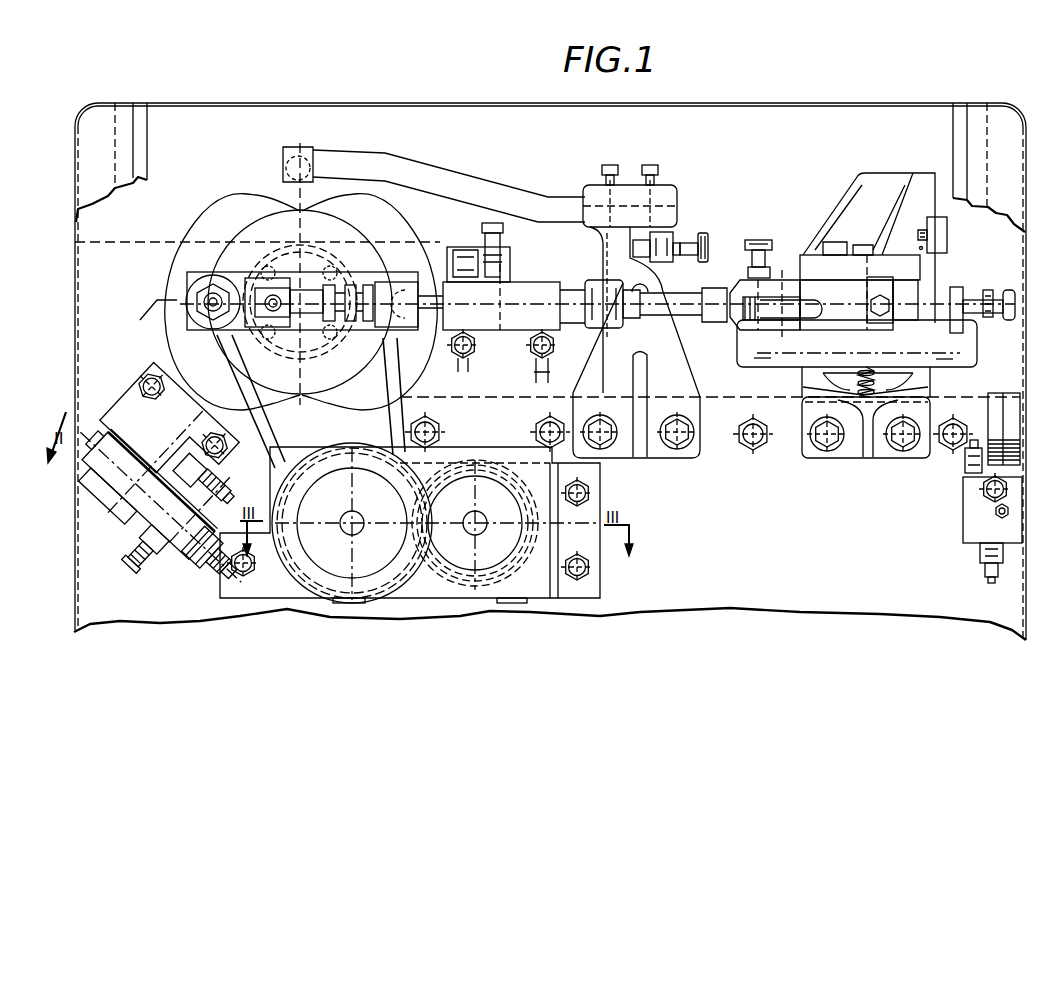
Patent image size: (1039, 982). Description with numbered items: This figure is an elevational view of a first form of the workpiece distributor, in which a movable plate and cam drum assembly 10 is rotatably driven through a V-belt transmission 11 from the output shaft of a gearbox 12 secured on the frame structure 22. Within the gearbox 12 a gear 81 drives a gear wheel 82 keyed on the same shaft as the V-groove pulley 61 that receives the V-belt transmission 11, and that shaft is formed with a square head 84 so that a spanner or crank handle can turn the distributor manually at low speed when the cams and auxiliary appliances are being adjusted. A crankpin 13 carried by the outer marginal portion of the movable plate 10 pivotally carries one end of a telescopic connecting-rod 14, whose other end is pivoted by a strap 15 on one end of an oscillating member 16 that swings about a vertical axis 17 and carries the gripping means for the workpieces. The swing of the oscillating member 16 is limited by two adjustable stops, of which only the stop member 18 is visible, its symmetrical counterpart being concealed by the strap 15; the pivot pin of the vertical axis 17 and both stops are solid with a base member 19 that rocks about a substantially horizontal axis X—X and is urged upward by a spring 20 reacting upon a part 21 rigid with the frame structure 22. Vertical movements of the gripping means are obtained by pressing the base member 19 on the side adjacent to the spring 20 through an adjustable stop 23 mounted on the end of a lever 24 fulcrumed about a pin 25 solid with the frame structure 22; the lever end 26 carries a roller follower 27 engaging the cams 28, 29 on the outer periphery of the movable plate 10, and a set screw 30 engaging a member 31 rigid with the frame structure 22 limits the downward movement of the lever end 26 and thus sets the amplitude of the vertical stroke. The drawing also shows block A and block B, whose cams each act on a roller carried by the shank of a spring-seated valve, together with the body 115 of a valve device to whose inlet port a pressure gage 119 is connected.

The movable plate and cam drum assembly 10 is at (253, 219).
The V-belt transmission 11 is at (262, 438).
The gearbox 12 is at (437, 598).
The crankpin 13 is at (200, 297).
The telescopic connecting-rod 14 is at (515, 283).
The strap 15 is at (791, 287).
The oscillating member 16 is at (848, 187).
The vertical axis 17 is at (866, 237).
The stop member 18 is at (967, 290).
The base member 19 is at (977, 340).
The spring 20 is at (887, 367).
The part rigid with frame structure 21 is at (878, 405).
The frame structure 22 is at (783, 447).
The adjustable stop 23 is at (757, 238).
The lever 24 is at (486, 187).
The pin 25 is at (663, 292).
The lever end 26 is at (306, 147).
The roller follower 27 is at (305, 180).
The cam 28 is at (401, 224).
The cam 29 is at (207, 217).
The set screw 30 is at (704, 232).
The member rigid with frame structure 31 is at (605, 248).
The V-groove pulley 61 is at (352, 523).
The gear 81 is at (500, 567).
The gear wheel 82 is at (310, 583).
The square head 84 is at (354, 528).
The valve device body 115 is at (970, 527).
The pressure gage 119 is at (1008, 430).
The block A is at (123, 428).
The block B is at (510, 352).